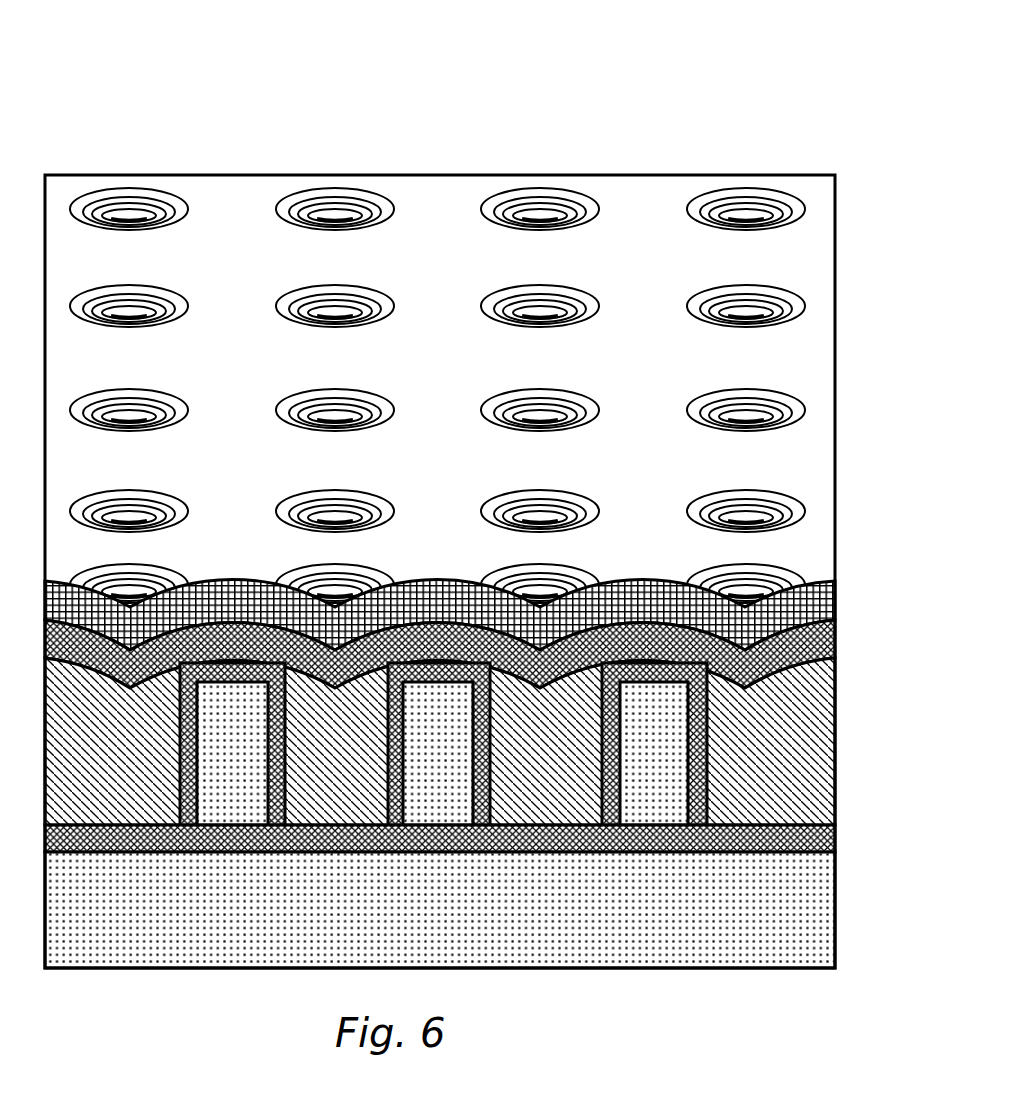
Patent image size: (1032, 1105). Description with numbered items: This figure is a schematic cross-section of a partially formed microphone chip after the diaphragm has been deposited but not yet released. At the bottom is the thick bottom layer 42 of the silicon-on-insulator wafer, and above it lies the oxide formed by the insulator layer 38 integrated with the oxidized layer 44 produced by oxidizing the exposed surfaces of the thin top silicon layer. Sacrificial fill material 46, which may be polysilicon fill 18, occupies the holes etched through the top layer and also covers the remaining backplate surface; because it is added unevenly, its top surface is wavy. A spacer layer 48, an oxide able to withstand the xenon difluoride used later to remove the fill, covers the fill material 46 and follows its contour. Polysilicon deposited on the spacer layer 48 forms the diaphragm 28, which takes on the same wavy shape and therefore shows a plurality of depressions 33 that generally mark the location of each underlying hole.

The polysilicon fill 18 is at (676, 80).
The diaphragm 28 is at (432, 203).
The depressions 33 is at (486, 322).
The spacer layer 48 is at (821, 642).
The fill material 46 is at (821, 745).
The insulator layer 38 is at (478, 840).
The oxidized layer 44 is at (819, 842).
The bottom layer 42 is at (821, 930).